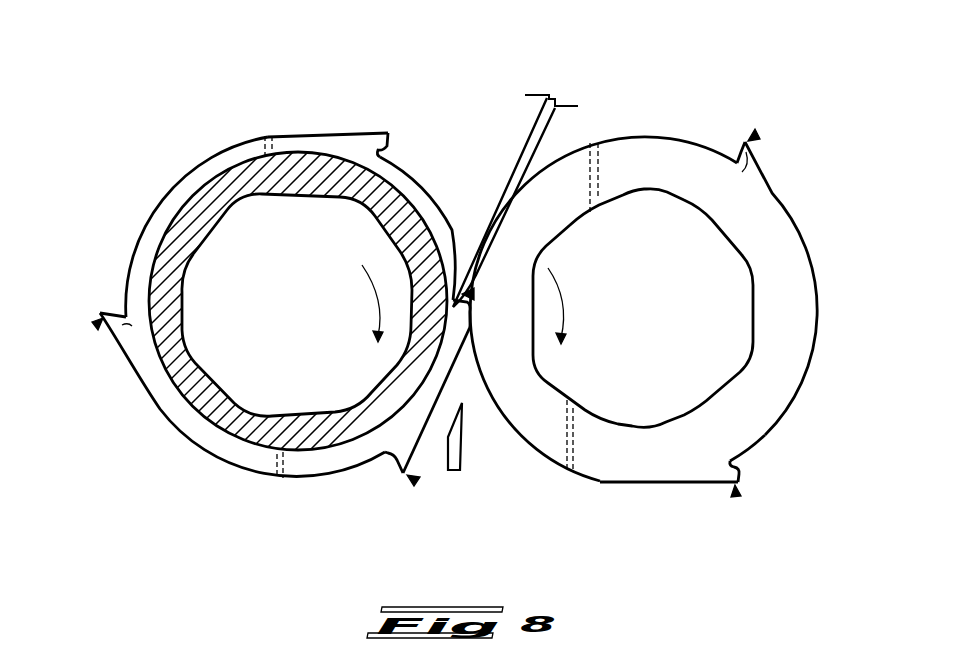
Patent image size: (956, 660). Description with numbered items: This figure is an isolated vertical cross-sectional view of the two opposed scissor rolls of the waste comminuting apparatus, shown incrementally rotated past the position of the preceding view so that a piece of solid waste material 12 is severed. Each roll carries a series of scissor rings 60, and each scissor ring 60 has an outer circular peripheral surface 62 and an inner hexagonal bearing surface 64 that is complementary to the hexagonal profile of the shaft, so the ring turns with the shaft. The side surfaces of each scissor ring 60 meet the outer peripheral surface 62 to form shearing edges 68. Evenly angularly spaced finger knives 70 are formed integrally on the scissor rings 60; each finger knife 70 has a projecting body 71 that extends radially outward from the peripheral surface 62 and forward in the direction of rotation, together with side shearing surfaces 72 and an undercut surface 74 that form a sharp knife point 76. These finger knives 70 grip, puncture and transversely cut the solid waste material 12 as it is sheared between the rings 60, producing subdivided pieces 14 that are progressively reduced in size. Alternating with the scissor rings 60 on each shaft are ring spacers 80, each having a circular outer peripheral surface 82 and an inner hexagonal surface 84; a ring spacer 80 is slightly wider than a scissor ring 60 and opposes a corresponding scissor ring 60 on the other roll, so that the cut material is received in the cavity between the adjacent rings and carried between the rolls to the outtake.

The solid waste material 12 is at (530, 138).
The subdivided pieces 14 is at (460, 457).
The scissor ring 60 is at (232, 158).
The outer circular peripheral surface 62 is at (162, 192).
The inner hexagonal bearing surface 64 is at (683, 207).
The shearing edges 68 is at (140, 230).
The finger knives 70 is at (100, 322).
The projecting body 71 is at (122, 325).
The side shearing surfaces 72 is at (360, 131).
The undercut surface 74 is at (392, 152).
The sharp knife point 76 is at (388, 132).
The ring spacer 80 is at (292, 186).
The circular outer peripheral surface 82 is at (200, 190).
The inner hexagonal surface 84 is at (267, 412).